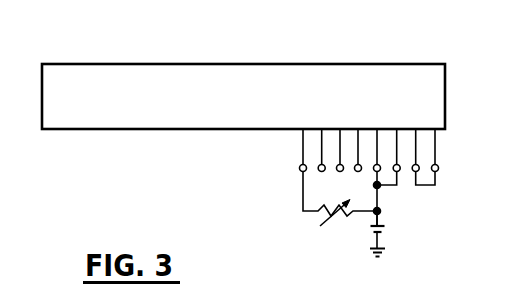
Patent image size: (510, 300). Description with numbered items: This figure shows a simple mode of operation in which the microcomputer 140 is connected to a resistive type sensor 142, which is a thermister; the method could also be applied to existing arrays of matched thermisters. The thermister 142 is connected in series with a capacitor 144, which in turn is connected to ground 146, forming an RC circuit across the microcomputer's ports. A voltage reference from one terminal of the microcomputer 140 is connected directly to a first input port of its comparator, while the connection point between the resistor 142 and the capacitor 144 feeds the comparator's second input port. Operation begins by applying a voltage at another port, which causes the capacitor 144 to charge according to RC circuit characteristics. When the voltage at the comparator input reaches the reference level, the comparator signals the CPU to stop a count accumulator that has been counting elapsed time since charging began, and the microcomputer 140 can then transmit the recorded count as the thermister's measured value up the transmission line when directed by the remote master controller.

The microcomputer 140 is at (264, 64).
The resistive type sensor 142 is at (343, 221).
The capacitor 144 is at (371, 232).
The ground 146 is at (382, 257).